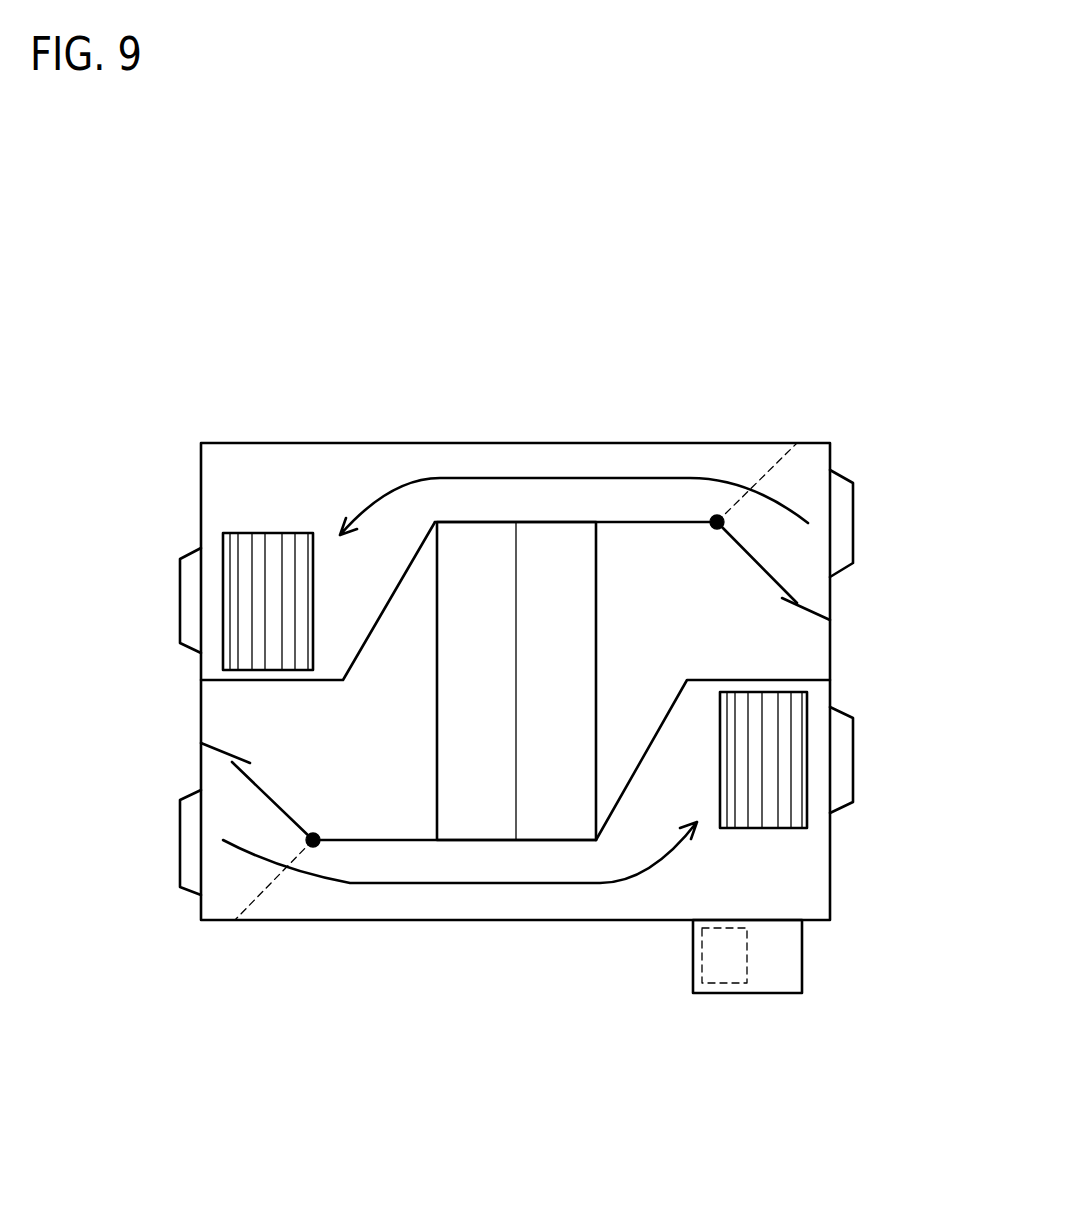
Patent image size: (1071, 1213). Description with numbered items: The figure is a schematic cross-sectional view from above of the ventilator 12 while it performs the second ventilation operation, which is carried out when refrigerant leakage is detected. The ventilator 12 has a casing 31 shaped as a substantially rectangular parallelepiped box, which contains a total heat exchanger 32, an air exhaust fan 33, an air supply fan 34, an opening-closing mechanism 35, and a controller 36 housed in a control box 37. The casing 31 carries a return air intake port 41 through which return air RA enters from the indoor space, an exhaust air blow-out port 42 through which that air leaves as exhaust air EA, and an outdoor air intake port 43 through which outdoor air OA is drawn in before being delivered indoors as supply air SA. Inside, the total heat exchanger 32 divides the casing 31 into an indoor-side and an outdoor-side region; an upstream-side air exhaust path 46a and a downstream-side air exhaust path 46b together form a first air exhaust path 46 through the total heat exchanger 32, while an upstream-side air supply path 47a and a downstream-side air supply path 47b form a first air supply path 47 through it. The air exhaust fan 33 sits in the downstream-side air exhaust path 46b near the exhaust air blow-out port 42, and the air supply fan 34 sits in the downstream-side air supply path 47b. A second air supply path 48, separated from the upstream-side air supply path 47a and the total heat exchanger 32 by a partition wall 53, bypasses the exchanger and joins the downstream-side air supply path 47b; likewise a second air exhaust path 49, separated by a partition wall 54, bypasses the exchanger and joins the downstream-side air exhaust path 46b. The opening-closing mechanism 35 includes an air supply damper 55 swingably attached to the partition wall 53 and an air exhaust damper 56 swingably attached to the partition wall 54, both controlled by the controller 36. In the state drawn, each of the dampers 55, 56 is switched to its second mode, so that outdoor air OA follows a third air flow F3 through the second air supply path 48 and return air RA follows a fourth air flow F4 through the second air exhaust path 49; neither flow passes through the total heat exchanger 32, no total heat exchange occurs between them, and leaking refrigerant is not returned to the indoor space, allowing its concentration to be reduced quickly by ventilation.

The ventilator 12 is at (769, 358).
The casing 31 is at (327, 443).
The total heat exchanger 32 is at (470, 787).
The air exhaust fan 33 is at (260, 560).
The air supply fan 34 is at (770, 815).
The opening-closing mechanism 35 is at (740, 459).
The controller 36 is at (725, 983).
The control box 37 is at (778, 993).
The return air intake port 41 is at (855, 505).
The exhaust air blow-out port 42 is at (177, 580).
The outdoor air intake port 43 is at (178, 860).
The first air exhaust path 46 is at (566, 615).
The upstream-side air exhaust path 46a is at (790, 650).
The downstream-side air exhaust path 46b is at (381, 569).
The first air supply path 47 is at (464, 745).
The upstream-side air supply path 47a is at (245, 713).
The downstream-side air supply path 47b is at (657, 790).
The second air supply path 48 is at (419, 904).
The second air exhaust path 49 is at (614, 458).
The partition wall 53 is at (352, 838).
The partition wall 54 is at (648, 525).
The air supply damper 55 is at (277, 800).
The air exhaust damper 56 is at (757, 562).
The third air flow F3 is at (513, 883).
The fourth air flow F4 is at (518, 478).
The return air RA is at (878, 532).
The supply air SA is at (866, 762).
The exhaust air EA is at (170, 601).
The outdoor air OA is at (154, 846).